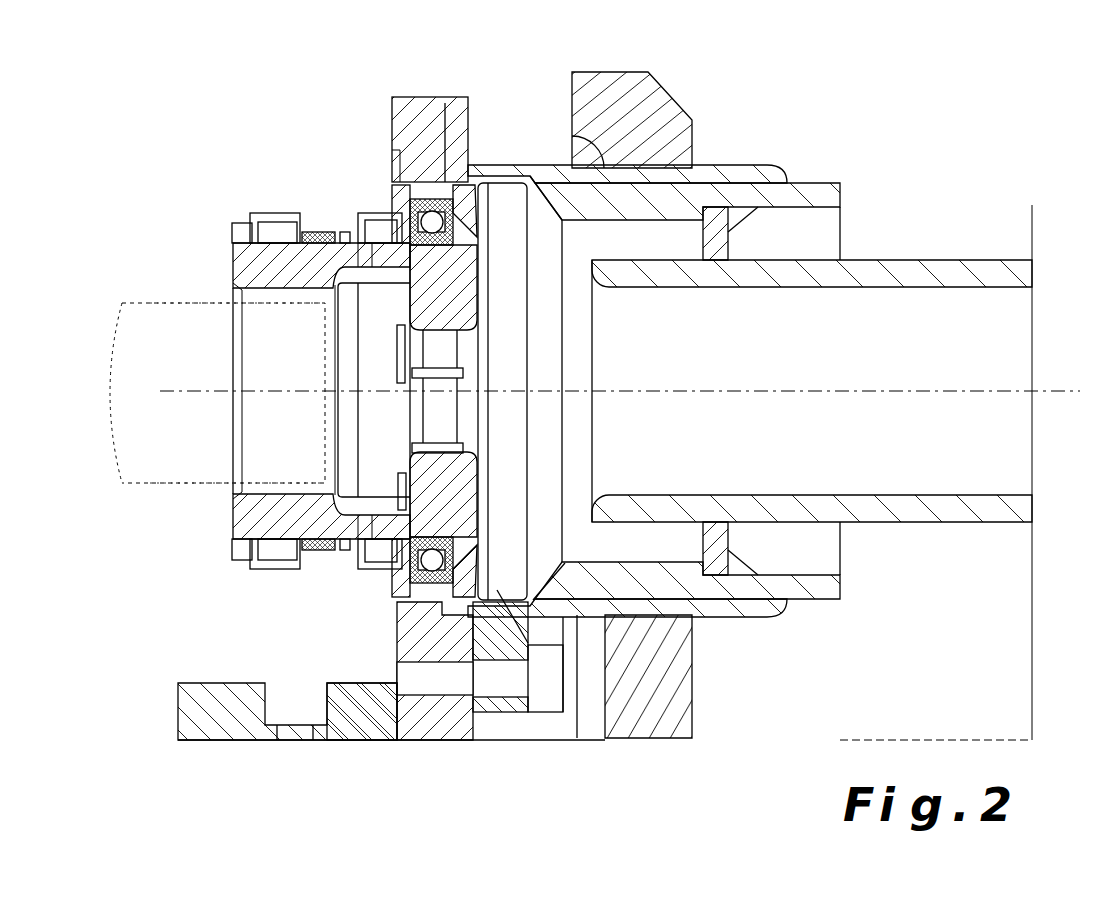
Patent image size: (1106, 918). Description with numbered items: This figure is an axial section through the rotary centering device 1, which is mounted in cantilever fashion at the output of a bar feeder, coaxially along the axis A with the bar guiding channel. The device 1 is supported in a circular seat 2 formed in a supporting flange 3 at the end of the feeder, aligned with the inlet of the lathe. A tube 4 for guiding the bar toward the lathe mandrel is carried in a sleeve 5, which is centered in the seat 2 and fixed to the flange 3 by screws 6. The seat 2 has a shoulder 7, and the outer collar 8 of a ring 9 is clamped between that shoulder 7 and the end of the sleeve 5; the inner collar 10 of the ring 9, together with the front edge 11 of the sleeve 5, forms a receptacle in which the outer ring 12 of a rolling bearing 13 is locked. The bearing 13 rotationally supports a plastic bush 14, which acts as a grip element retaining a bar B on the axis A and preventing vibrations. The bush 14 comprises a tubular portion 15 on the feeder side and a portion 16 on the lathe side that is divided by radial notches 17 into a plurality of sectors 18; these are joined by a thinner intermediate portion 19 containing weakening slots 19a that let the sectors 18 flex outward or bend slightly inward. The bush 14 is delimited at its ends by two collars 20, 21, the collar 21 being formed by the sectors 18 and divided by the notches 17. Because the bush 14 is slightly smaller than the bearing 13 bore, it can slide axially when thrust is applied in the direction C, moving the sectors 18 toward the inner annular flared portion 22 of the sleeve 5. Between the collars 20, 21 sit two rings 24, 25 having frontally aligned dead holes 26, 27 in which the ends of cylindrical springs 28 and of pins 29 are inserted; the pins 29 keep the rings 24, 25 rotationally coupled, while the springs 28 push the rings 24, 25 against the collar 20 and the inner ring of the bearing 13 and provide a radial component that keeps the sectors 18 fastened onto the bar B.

The rotary centering device 1 is at (212, 148).
The circular seat 2 is at (400, 188).
The flange 3 is at (408, 95).
The tube 4 is at (968, 258).
The sleeve 5 is at (728, 165).
The screws 6 is at (545, 690).
The shoulder 7 is at (400, 152).
The outer collar 8 is at (445, 103).
The ring 9 is at (472, 170).
The inner collar 10 is at (395, 205).
The front edge 11 is at (477, 220).
The outer ring 12 is at (445, 667).
The rolling bearing 13 is at (455, 563).
The bush 14 is at (233, 438).
The tubular portion 15 is at (245, 262).
The portion 16 is at (482, 285).
The notches 17 is at (463, 369).
The sectors 18 is at (463, 424).
The intermediate portion 19 is at (398, 362).
The weakening slots 19a is at (400, 476).
The collar 20 is at (245, 538).
The collar 21 is at (480, 545).
The inner annular flared portion 22 is at (518, 165).
The ring 24 is at (252, 572).
The ring 25 is at (392, 580).
The dead holes 26 is at (267, 578).
The dead holes 27 is at (365, 572).
The cylindrical springs 28 is at (325, 565).
The pins 29 is at (318, 235).
The axis A is at (810, 388).
The bar B is at (148, 488).
The direction C is at (205, 343).